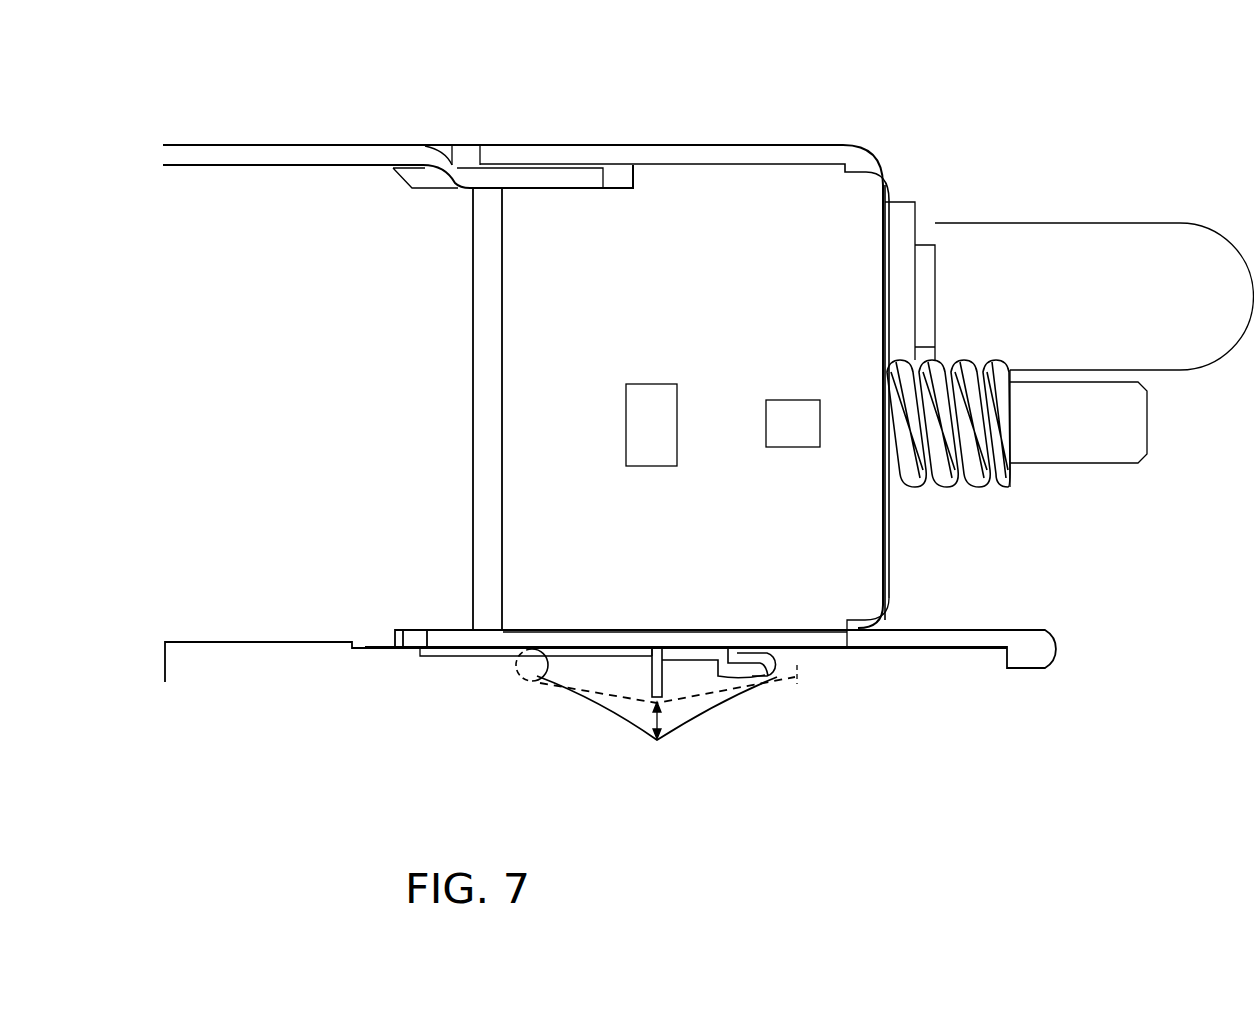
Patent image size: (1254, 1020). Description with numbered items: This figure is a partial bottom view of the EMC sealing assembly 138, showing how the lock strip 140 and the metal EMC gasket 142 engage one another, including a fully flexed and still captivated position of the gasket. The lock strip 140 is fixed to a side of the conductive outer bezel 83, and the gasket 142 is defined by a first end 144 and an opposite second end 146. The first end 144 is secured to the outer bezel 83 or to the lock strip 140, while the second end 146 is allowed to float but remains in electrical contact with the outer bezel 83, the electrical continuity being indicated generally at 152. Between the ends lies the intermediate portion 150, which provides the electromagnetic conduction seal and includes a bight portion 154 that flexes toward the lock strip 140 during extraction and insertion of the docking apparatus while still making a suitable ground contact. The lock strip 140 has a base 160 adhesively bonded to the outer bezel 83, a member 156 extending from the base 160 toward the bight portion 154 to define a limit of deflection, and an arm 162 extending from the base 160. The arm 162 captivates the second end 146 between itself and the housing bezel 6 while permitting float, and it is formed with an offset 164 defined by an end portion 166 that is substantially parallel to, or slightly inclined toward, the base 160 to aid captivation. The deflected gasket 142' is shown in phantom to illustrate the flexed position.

The outer bezel 83 is at (770, 146).
The housing bezel 6 is at (833, 647).
The base 160 is at (688, 650).
The second end 146 is at (740, 650).
The electrical continuity 152 is at (795, 655).
The metal EMC gasket 142 is at (603, 776).
The deflected gasket 142' is at (707, 763).
The first end 144 is at (522, 680).
The lock strip 140 is at (646, 661).
The member 156 is at (648, 672).
The bight portion 154 is at (660, 740).
The EMC sealing assembly 138 is at (689, 777).
The intermediate portion 150 is at (682, 706).
The offset 164 is at (720, 676).
The arm 162 is at (768, 680).
The end portion 166 is at (783, 668).